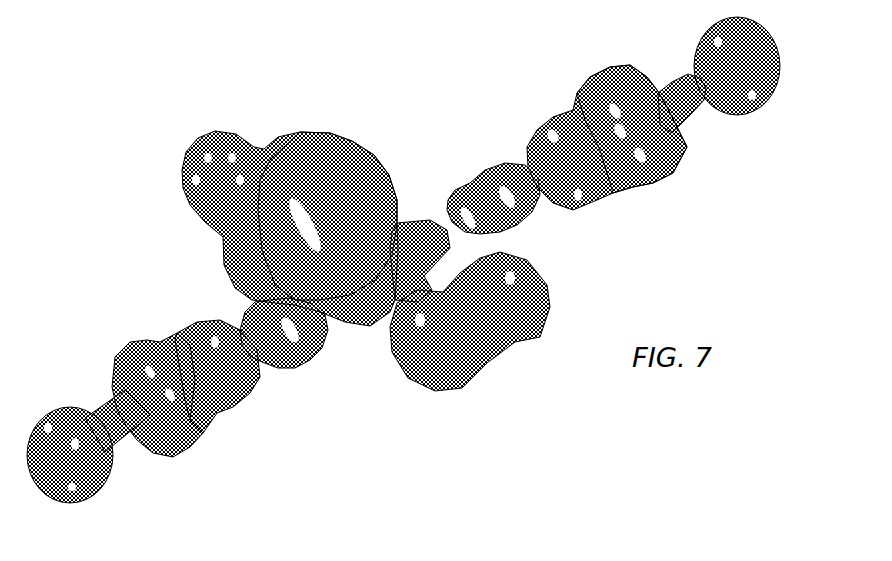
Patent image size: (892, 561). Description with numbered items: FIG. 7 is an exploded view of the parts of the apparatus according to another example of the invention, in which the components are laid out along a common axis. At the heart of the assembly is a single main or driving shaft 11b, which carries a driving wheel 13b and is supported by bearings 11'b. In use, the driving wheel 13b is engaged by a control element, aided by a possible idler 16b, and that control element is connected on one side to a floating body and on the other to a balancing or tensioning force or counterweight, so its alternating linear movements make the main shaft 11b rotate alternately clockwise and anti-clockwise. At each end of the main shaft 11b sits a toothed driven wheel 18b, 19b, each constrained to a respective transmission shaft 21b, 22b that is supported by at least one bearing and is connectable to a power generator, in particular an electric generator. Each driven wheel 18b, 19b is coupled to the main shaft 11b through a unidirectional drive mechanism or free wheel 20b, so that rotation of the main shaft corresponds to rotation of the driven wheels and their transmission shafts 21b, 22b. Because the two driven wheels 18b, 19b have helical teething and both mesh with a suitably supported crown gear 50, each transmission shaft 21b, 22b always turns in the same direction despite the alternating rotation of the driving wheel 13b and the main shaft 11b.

The crown gear 50 is at (302, 138).
The main shaft 11b is at (350, 300).
The driving wheel 13b is at (395, 233).
The idler 16b is at (495, 345).
The bearings 11'b is at (390, 260).
The toothed driven wheel 18b is at (612, 68).
The toothed driven wheel 19b is at (192, 450).
The unidirectional drive mechanism or free wheel 20b is at (244, 407).
The transmission shaft 21b is at (690, 115).
The transmission shaft 22b is at (110, 407).